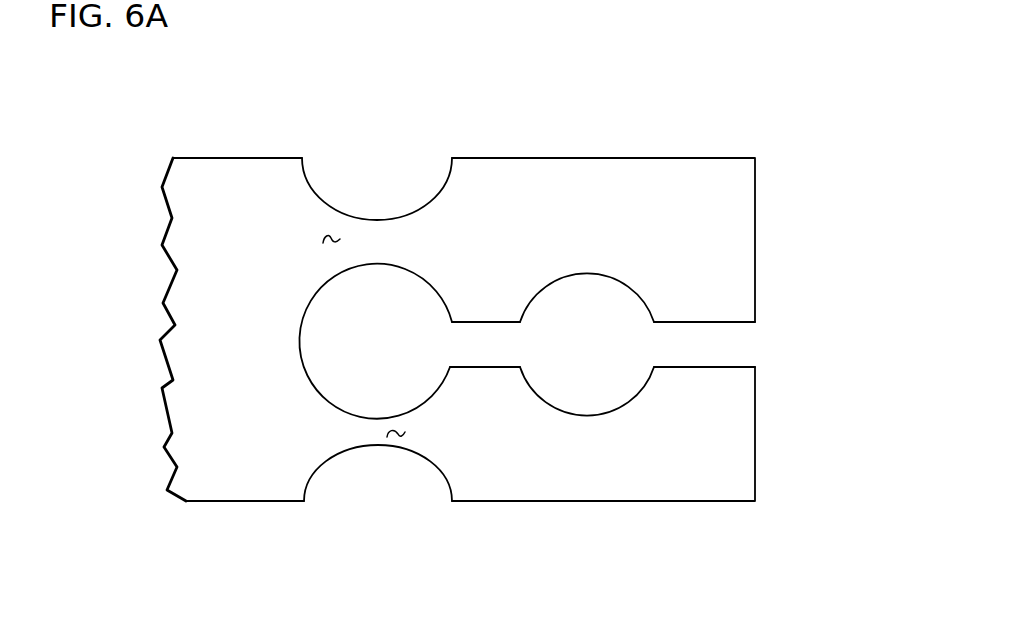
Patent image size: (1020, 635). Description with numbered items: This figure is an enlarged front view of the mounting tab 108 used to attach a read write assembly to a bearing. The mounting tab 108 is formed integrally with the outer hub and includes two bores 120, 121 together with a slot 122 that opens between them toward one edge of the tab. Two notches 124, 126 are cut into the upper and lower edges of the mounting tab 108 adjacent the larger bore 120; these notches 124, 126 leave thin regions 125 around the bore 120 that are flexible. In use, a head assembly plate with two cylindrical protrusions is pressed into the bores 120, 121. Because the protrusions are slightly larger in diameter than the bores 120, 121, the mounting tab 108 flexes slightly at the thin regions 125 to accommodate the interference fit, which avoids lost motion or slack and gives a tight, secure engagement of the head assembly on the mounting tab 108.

The mounting tab 108 is at (253, 158).
The bore 120 is at (425, 278).
The bore 121 is at (605, 275).
The slot 122 is at (718, 348).
The notch 124 is at (392, 218).
The thin regions 125 is at (330, 238).
The notch 126 is at (375, 447).